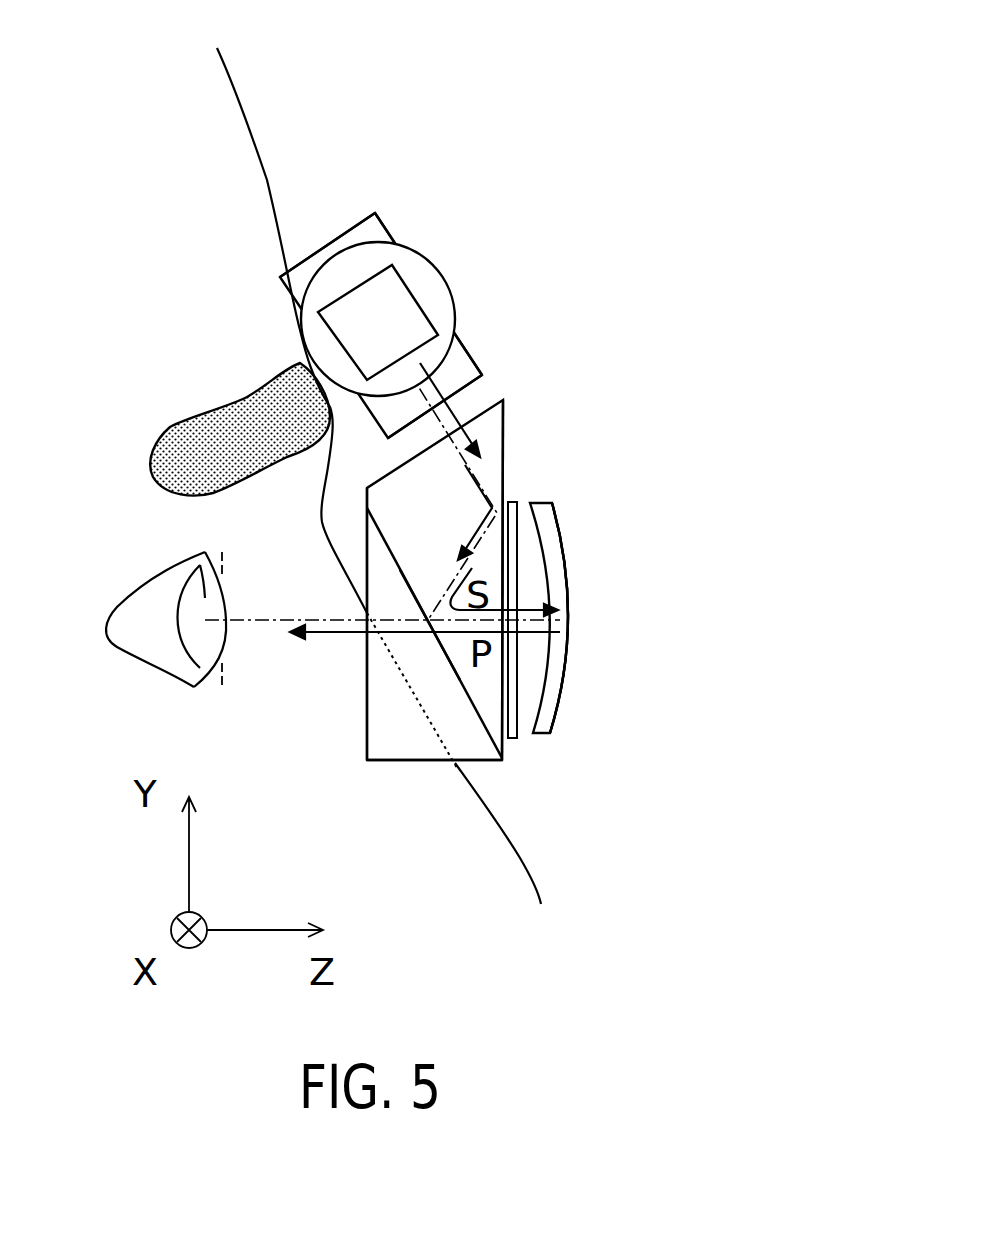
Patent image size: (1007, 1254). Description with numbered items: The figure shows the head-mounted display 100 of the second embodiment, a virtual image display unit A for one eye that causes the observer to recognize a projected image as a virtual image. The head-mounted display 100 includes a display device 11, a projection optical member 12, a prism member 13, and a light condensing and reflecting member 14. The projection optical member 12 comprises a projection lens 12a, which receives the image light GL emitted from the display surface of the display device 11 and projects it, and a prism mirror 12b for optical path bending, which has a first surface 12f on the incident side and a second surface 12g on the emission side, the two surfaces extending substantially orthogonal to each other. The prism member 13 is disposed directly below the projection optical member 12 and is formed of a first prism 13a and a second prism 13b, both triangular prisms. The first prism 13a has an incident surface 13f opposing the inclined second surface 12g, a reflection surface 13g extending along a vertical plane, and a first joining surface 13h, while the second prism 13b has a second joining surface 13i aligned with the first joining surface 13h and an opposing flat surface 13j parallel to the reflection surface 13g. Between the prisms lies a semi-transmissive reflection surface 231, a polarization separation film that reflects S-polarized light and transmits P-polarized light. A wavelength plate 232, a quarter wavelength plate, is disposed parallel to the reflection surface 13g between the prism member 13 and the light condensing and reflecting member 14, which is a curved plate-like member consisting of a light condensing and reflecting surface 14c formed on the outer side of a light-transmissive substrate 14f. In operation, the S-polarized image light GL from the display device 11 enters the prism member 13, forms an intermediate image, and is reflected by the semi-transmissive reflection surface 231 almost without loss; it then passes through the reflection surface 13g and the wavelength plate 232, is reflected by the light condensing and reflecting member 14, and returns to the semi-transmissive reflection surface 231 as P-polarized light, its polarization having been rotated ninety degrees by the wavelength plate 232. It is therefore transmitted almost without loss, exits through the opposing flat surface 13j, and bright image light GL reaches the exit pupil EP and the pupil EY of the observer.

The head-mounted display 100 is at (580, 293).
The virtual image display unit A is at (538, 104).
The display device 11 is at (415, 298).
The projection optical member 12 is at (405, 242).
The projection lens 12a is at (367, 256).
The prism mirror 12b is at (337, 247).
The first surface 12f is at (452, 363).
The second surface 12g is at (470, 388).
The prism member 13 is at (522, 430).
The first prism 13a is at (503, 484).
The second prism 13b is at (410, 742).
The incident surface 13f is at (332, 420).
The reflection surface 13g is at (518, 719).
The first joining surface 13h is at (455, 672).
The second joining surface 13i is at (493, 680).
The opposing flat surface 13j is at (367, 570).
The light condensing and reflecting member 14 is at (567, 562).
The substrate 14f is at (558, 580).
The light condensing and reflecting surface 14c is at (566, 598).
The semi-transmissive reflection surface 231 is at (439, 643).
The wavelength plate 232 is at (518, 740).
The image light GL is at (480, 398).
The pupil EY is at (187, 587).
The exit pupil EP is at (225, 580).